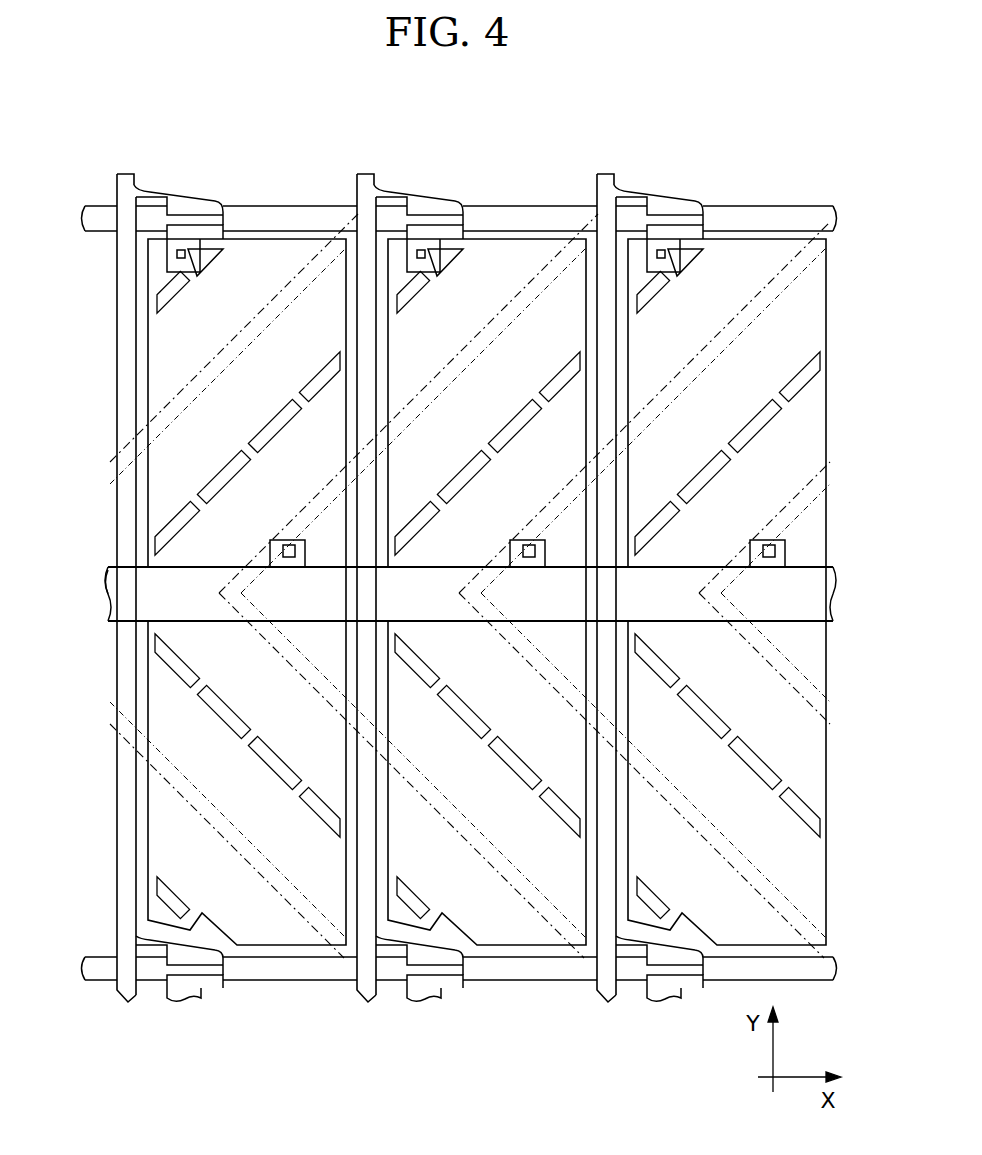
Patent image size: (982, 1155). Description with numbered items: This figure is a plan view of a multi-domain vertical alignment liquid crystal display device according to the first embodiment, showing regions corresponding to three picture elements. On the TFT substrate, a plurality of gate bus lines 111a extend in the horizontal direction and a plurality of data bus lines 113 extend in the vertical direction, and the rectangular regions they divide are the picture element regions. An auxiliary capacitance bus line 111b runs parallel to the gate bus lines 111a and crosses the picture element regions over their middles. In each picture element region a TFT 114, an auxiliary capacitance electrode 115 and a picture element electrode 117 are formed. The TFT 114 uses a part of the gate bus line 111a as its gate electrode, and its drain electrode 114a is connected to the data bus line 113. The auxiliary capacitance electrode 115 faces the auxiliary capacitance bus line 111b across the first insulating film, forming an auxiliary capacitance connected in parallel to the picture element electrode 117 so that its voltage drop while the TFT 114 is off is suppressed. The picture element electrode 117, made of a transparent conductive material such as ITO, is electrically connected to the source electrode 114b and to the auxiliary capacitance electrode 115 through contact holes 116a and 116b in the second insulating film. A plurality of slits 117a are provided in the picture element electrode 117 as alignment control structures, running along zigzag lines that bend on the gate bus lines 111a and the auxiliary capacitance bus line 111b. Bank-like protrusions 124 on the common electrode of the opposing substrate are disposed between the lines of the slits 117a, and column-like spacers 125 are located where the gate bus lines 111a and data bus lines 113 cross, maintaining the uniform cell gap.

The gate bus line 111a is at (93, 212).
The auxiliary capacitance bus line 111b is at (107, 580).
The data bus line 113 is at (122, 173).
The TFT 114 is at (207, 165).
The drain electrode 114a is at (182, 191).
The source electrode 114b is at (227, 207).
The auxiliary capacitance electrode 115 is at (204, 623).
The contact hole 116a is at (190, 256).
The contact hole 116b is at (289, 545).
The picture element electrode 117 is at (160, 358).
The slit 117a is at (222, 470).
The protrusion 124 is at (229, 341).
The spacer 125 is at (356, 188).